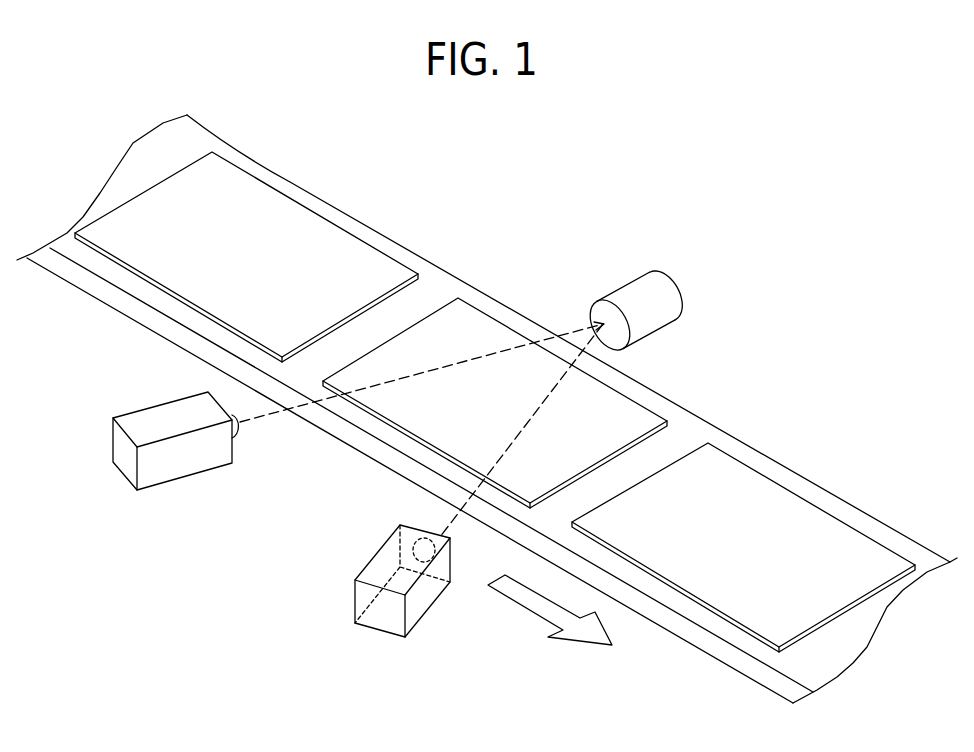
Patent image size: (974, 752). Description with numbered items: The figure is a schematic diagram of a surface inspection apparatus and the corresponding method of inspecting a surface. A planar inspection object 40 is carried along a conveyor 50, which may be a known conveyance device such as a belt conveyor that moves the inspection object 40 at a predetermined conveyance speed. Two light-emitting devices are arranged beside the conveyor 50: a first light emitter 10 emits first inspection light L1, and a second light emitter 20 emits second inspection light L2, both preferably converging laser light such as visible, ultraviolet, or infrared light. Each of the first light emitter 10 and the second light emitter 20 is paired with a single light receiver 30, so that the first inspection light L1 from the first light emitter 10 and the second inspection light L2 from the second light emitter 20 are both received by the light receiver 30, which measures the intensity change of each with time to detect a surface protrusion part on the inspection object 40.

The first light emitter 10 is at (127, 462).
The second light emitter 20 is at (380, 617).
The light receiver 30 is at (632, 295).
The inspection object 40 is at (489, 333).
The conveyor 50 is at (775, 470).
The first inspection light L1 is at (443, 367).
The second inspection light L2 is at (540, 415).